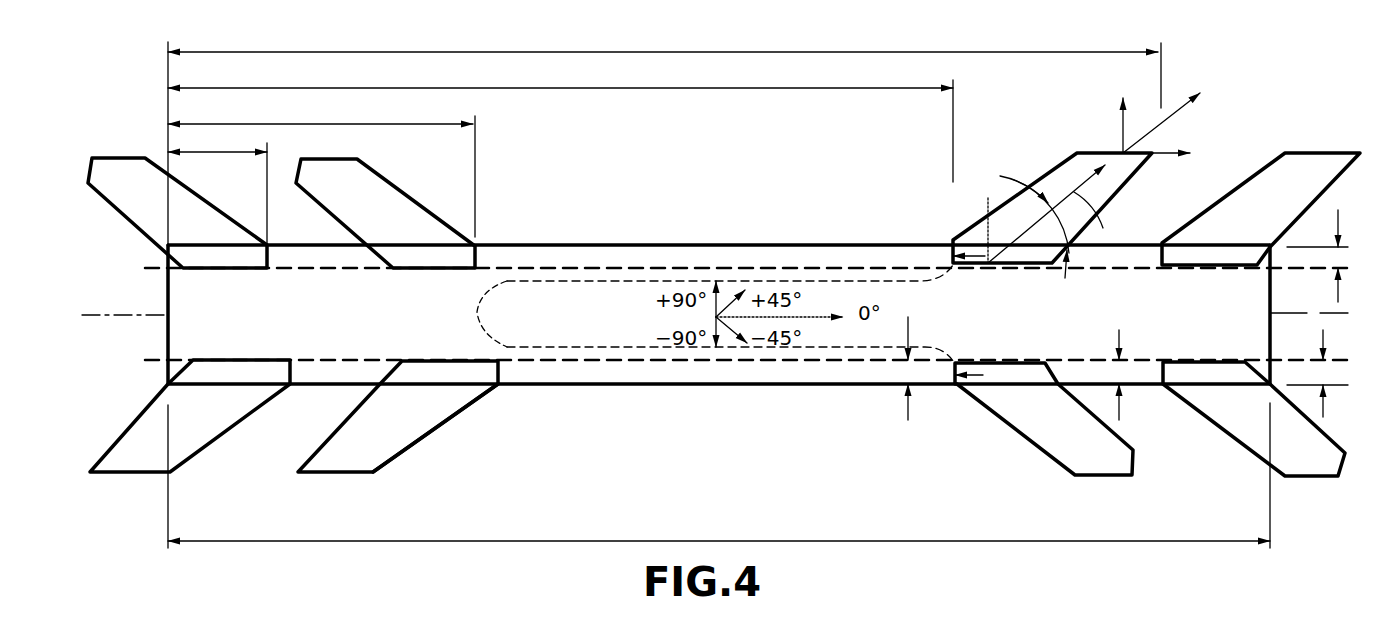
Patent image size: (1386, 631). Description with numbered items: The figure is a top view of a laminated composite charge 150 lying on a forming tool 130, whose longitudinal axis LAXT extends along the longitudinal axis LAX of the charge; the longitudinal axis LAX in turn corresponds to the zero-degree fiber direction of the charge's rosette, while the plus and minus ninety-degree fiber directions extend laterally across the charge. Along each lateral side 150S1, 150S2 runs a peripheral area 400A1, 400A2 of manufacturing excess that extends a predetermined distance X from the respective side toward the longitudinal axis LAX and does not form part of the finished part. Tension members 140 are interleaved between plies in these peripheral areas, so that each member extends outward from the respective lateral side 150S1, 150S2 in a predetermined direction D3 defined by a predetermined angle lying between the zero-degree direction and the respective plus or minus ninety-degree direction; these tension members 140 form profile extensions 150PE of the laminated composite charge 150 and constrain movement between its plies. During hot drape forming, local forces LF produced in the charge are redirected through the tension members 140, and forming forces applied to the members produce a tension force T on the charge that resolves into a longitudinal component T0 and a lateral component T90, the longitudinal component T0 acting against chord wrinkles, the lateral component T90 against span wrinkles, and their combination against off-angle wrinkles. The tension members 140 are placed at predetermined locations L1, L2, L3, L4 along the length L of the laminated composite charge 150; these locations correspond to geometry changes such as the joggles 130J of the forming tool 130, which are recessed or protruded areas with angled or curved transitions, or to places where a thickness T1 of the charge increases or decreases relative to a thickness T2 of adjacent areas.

The forming tool 130 is at (168, 327).
The joggles 130J is at (487, 300).
The tension members 140 is at (116, 157).
The laminated composite charge 150 is at (540, 389).
The profile extensions 150PE is at (405, 458).
The lateral side 150S1 is at (765, 243).
The lateral side 150S2 is at (803, 388).
The peripheral area 400A1 is at (645, 376).
The peripheral area 400A2 is at (655, 253).
The length L is at (680, 540).
The predetermined location L1 is at (205, 155).
The predetermined location L2 is at (308, 124).
The predetermined location L3 is at (612, 88).
The predetermined location L4 is at (600, 52).
The thickness T1 is at (913, 363).
The thickness T2 is at (1096, 365).
The predetermined distance X is at (1340, 262).
The local forces LF is at (973, 262).
The predetermined direction D3 is at (1095, 219).
The tension force T is at (1168, 118).
The longitudinal component T0 is at (1170, 157).
The lateral component T90 is at (1117, 109).
The longitudinal axis LAX is at (1308, 313).
The longitudinal axis LAXT is at (168, 314).